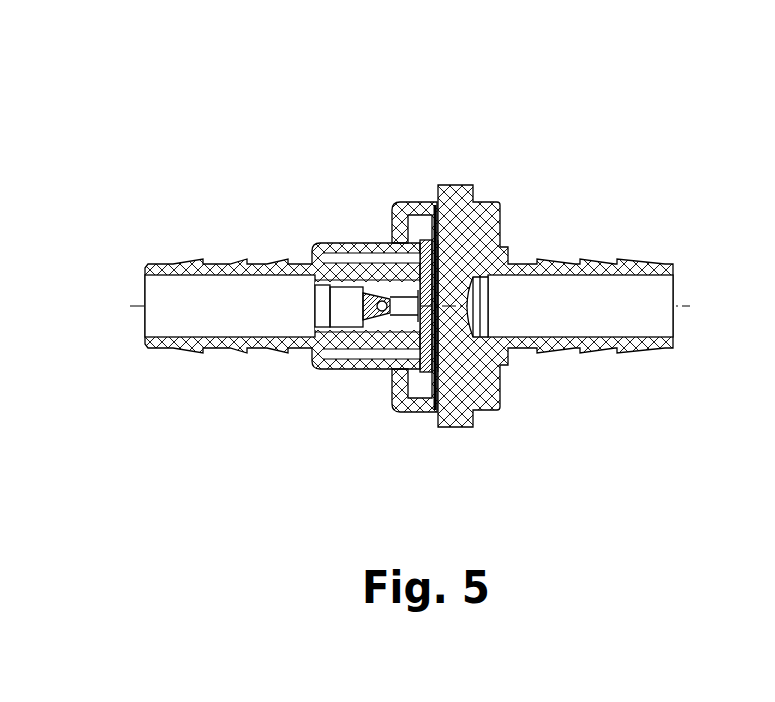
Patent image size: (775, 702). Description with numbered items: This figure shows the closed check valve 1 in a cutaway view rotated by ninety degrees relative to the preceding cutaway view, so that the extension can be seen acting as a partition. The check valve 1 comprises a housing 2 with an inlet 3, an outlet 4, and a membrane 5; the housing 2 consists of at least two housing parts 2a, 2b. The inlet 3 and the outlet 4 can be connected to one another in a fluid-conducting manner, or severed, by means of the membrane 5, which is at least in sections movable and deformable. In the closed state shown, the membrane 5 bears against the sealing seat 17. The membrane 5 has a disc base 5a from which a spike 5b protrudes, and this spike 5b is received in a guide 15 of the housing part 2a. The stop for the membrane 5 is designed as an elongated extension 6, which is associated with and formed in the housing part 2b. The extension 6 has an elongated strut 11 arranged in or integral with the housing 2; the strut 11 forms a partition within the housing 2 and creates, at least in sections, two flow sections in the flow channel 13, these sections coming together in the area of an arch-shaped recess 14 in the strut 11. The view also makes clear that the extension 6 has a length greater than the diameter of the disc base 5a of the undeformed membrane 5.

The check valve 1 is at (162, 131).
The housing 2 is at (180, 259).
The housing part 2a is at (275, 350).
The housing part 2b is at (490, 400).
The inlet 3 is at (247, 310).
The outlet 4 is at (647, 305).
The membrane 5 is at (414, 243).
The disc base 5a is at (430, 370).
The spike 5b is at (390, 293).
The extension 6 is at (455, 298).
The strut 11 is at (465, 237).
The flow channel 13 is at (510, 307).
The arch-shaped recess 14 is at (483, 305).
The guide 15 is at (390, 305).
The sealing seat 17 is at (418, 363).